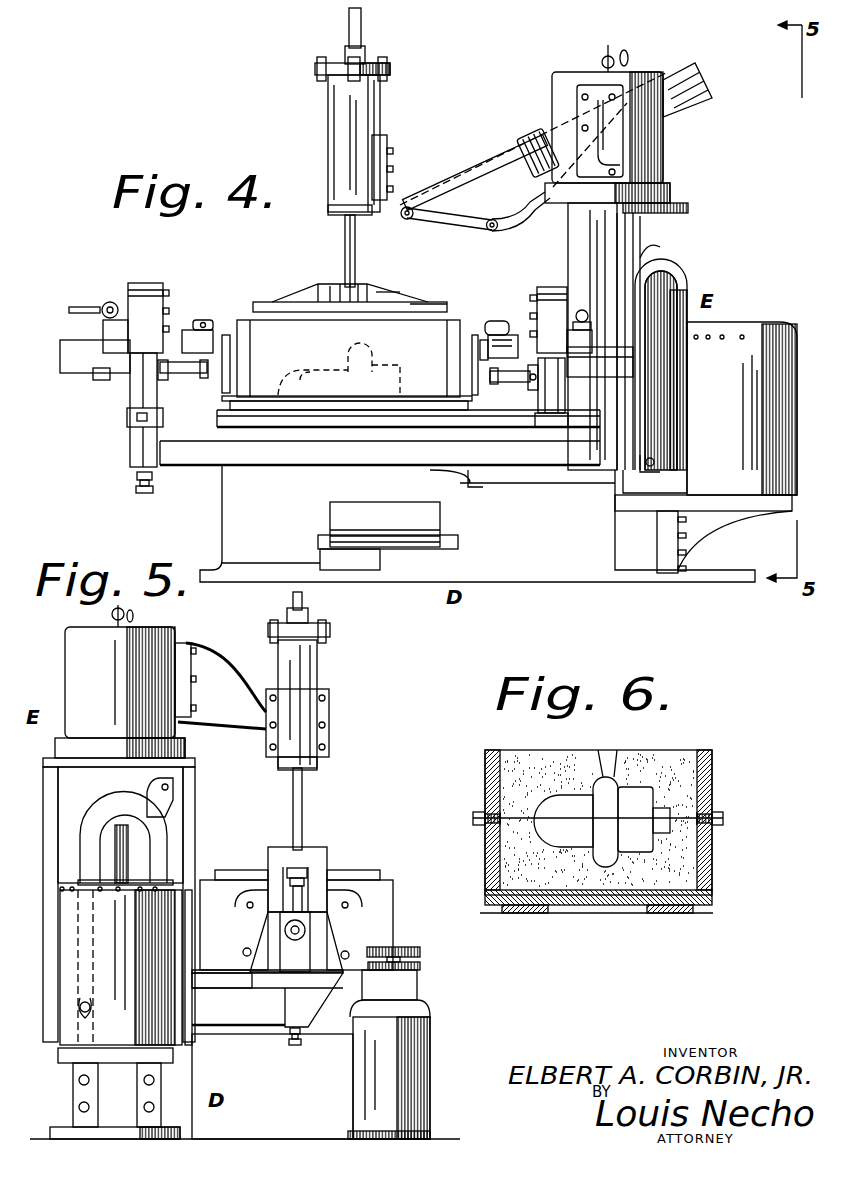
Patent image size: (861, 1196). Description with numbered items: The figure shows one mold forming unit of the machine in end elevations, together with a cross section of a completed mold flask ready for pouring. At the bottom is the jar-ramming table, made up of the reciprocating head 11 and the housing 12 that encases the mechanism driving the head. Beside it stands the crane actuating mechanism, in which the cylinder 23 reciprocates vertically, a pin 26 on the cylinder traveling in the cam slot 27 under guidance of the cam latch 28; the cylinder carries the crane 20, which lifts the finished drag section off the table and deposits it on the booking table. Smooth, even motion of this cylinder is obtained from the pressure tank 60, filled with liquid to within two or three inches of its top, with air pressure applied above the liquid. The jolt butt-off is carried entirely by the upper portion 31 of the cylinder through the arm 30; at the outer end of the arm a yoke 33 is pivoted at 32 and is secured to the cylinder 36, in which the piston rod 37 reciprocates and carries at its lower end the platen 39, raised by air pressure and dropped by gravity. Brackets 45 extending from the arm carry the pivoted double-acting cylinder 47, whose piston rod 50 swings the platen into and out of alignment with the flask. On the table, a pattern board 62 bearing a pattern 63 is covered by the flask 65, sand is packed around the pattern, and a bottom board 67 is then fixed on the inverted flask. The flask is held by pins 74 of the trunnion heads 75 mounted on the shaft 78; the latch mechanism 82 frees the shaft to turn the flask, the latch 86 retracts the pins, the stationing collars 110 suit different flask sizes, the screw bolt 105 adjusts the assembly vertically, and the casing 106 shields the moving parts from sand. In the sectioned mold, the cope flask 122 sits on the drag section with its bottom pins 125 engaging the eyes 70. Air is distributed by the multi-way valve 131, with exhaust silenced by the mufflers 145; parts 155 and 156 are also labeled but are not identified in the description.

In FIG. 4, the reciprocating head 11 is at (333, 420).
In FIG. 5, the reciprocating head 11 is at (226, 960).
In FIG. 4, the housing 12 is at (477, 523).
In FIG. 5, the housing 12 is at (271, 1086).
In FIG. 4, the crane 20 is at (380, 439).
In FIG. 5, the crane 20 is at (267, 997).
In FIG. 4, the cylinder 23 is at (580, 245).
In FIG. 4, the pin 26 is at (658, 461).
In FIG. 5, the pin 26 is at (108, 991).
In FIG. 4, the cam slot 27 is at (670, 250).
In FIG. 5, the cam slot 27 is at (103, 810).
In FIG. 5, the cam latch 28 is at (162, 798).
In FIG. 4, the arm or bracket 30 is at (527, 200).
In FIG. 5, the arm or bracket 30 is at (245, 700).
In FIG. 4, the upper portion of the cylinder 31 is at (660, 153).
In FIG. 5, the upper portion of the cylinder 31 is at (119, 686).
In FIG. 4, the pivot 32 is at (407, 220).
In FIG. 4, the yoke 33 is at (450, 210).
In FIG. 4, the cylinder 36 is at (343, 108).
In FIG. 5, the cylinder 36 is at (303, 670).
In FIG. 4, the piston rod 37 is at (349, 24).
In FIG. 5, the piston rod 37 is at (293, 790).
In FIG. 4, the platen 39 is at (335, 289).
In FIG. 5, the platen 39 is at (265, 855).
In FIG. 4, the brackets 45 is at (577, 140).
In FIG. 4, the cylinder 47 is at (690, 108).
In FIG. 4, the piston rod 50 is at (488, 150).
In FIG. 4, the pressure tank 60 is at (706, 447).
In FIG. 5, the pressure tank 60 is at (121, 1014).
In FIG. 5, the pattern board 62 is at (268, 1000).
In FIG. 4, the pattern 63 is at (351, 346).
In FIG. 4, the flask 65 is at (341, 357).
In FIG. 6, the flask 65 is at (488, 862).
In FIG. 4, the bottom board 67 is at (318, 396).
In FIG. 6, the eyes 70 is at (478, 812).
In FIG. 4, the pins 74 is at (240, 360).
In FIG. 5, the pins 74 is at (338, 890).
In FIG. 4, the trunnion heads 75 is at (160, 397).
In FIG. 4, the shaft 78 is at (83, 377).
In FIG. 5, the shaft 78 is at (305, 937).
In FIG. 4, the latch mechanism 82 is at (80, 306).
In FIG. 5, the latch mechanism 82 is at (302, 872).
In FIG. 4, the latch 86 is at (495, 323).
In FIG. 4, the screw bolt 105 is at (137, 483).
In FIG. 5, the screw bolt 105 is at (300, 1040).
In FIG. 4, the casing 106 is at (143, 283).
In FIG. 5, the casing 106 is at (295, 852).
In FIG. 4, the stationing collars 110 is at (160, 371).
In FIG. 6, the cope flask 122 is at (492, 757).
In FIG. 4, the bottom pins 125 is at (247, 364).
In FIG. 6, the bottom pins 125 is at (485, 825).
In FIG. 5, the multi-way valve 131 is at (420, 992).
In FIG. 4, the mufflers 145 is at (388, 536).
In FIG. 4, the plate 155 is at (445, 296).
In FIG. 4, the plate 156 is at (398, 290).